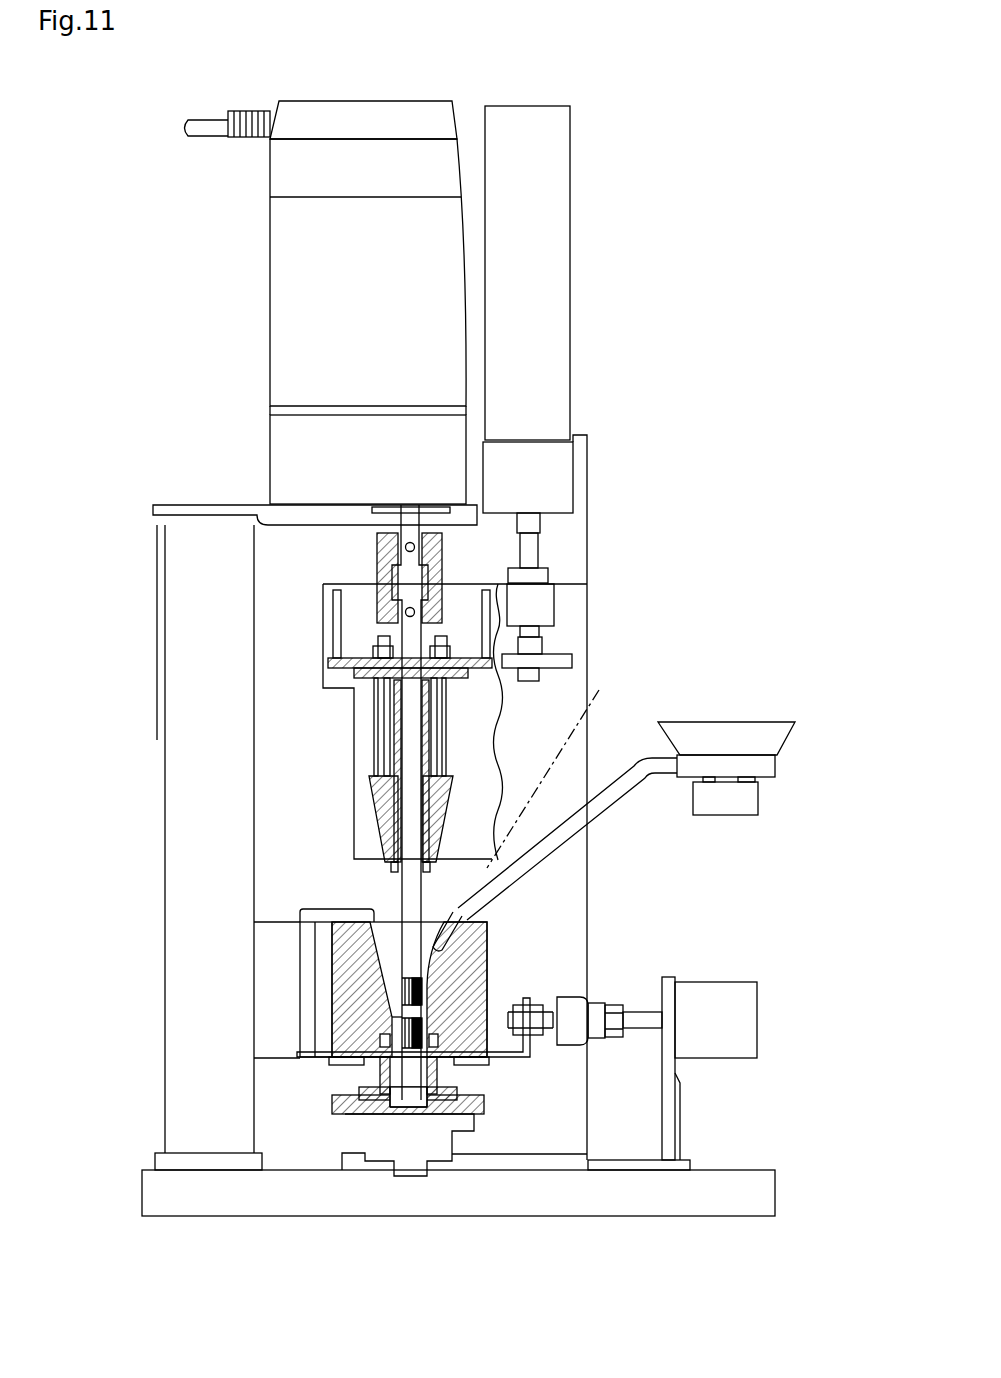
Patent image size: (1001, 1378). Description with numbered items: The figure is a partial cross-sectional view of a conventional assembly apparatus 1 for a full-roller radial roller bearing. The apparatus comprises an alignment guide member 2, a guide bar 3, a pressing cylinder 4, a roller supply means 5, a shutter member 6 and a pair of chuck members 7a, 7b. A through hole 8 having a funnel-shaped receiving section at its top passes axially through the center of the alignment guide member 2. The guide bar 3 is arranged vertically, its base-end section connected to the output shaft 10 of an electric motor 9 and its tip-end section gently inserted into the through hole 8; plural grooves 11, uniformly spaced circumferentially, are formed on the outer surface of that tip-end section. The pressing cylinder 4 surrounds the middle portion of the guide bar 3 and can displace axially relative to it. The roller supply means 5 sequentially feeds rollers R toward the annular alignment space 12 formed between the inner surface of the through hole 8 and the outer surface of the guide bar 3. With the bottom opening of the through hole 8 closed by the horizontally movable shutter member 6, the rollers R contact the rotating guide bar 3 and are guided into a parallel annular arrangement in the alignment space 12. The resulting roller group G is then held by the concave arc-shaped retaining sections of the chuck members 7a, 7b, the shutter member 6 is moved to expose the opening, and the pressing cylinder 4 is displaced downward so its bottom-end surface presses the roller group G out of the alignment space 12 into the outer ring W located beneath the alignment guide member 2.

The assembly apparatus 1 is at (596, 287).
The alignment guide member 2 is at (358, 937).
The guide bar 3 is at (410, 888).
The pressing cylinder 4 is at (368, 797).
The roller supply means 5 is at (723, 735).
The shutter member 6 is at (518, 1057).
The chuck member 7a is at (380, 1040).
The chuck member 7b is at (433, 1033).
The through hole 8 is at (330, 910).
The electric motor 9 is at (296, 275).
The output shaft 10 is at (405, 536).
The grooves 11 is at (401, 985).
The alignment space 12 is at (392, 1015).
The rollers R is at (424, 978).
The roller group G is at (297, 1055).
The outer ring W is at (380, 1075).